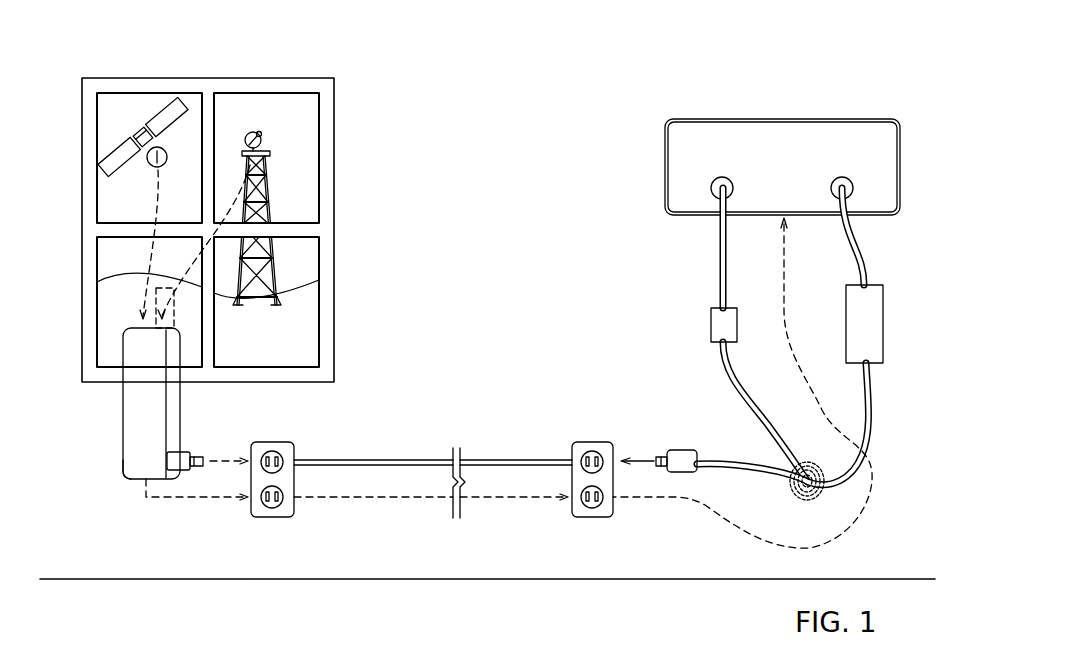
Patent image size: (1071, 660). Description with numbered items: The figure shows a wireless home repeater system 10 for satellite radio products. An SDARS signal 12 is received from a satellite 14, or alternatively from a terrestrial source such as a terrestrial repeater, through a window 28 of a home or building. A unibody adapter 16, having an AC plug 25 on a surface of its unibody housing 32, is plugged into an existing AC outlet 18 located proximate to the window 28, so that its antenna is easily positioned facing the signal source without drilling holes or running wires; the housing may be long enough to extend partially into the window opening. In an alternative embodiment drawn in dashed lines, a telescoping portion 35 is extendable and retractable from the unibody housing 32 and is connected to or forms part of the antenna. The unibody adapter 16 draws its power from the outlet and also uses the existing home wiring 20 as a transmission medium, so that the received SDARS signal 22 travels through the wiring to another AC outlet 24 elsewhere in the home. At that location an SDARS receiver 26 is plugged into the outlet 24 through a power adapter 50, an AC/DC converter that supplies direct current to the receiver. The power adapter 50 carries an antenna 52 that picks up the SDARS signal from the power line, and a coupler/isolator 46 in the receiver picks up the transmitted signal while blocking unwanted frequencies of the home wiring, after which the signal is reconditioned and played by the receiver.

The wireless home repeater system 10 is at (797, 63).
The SDARS signal 12 is at (145, 252).
The satellite 14 is at (153, 150).
The unibody adapter 16 is at (120, 418).
The AC outlet 18 is at (270, 442).
The home wiring 20 is at (533, 460).
The received SDARS signal 22 is at (535, 500).
The AC outlet 24 is at (592, 442).
The AC plug 25 is at (181, 470).
The SDARS receiver 26 is at (900, 178).
The window 28 is at (231, 206).
The unibody housing 32 is at (123, 460).
The telescoping portion 35 is at (146, 300).
The coupler/isolator 46 is at (815, 495).
The power adapter 50 is at (876, 410).
The antenna 52 is at (722, 372).